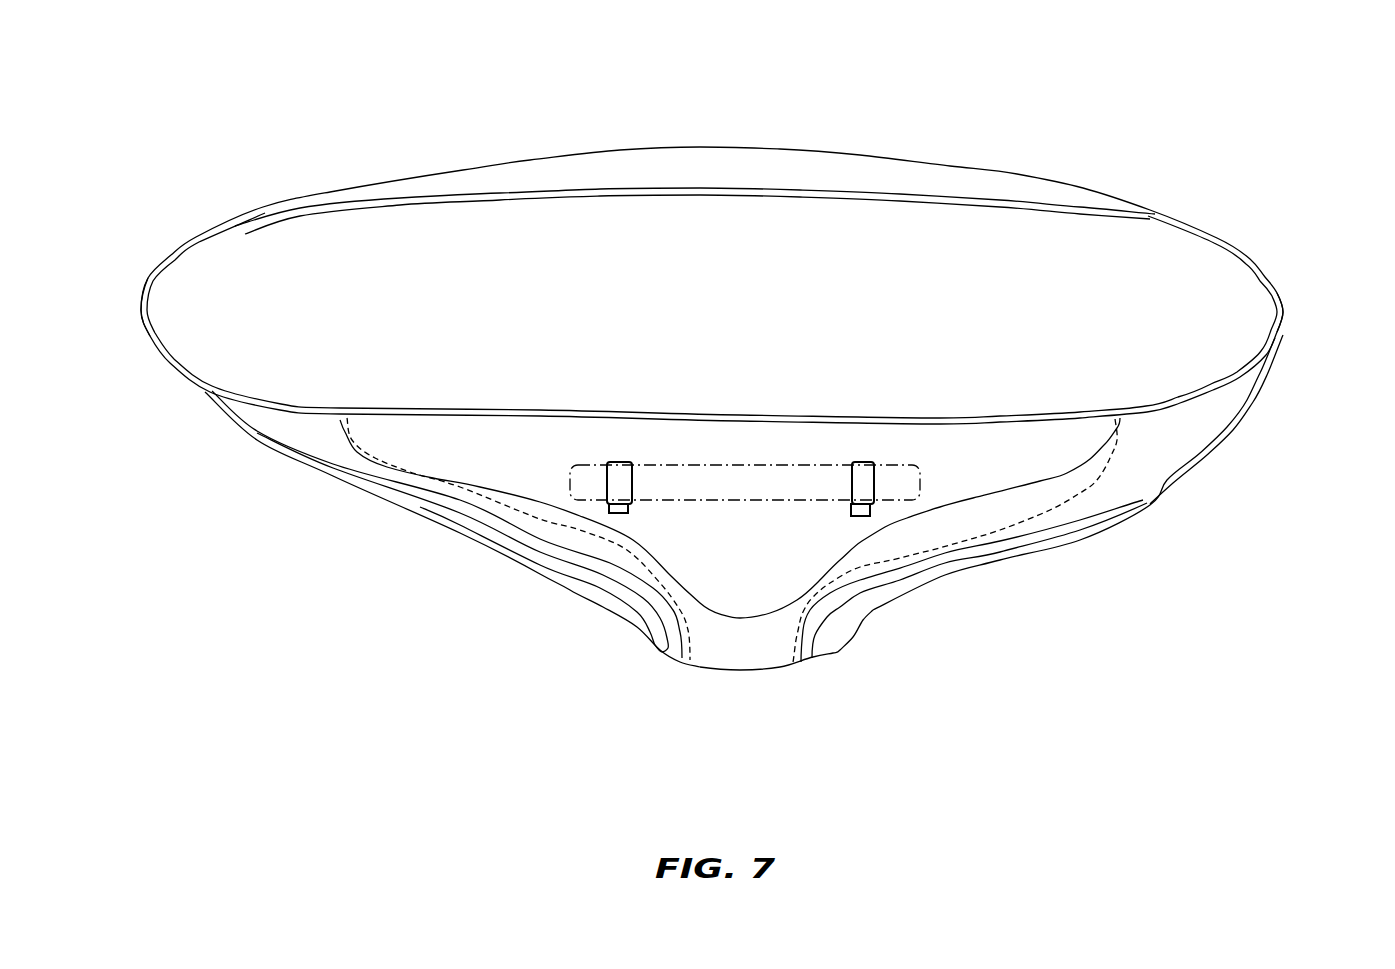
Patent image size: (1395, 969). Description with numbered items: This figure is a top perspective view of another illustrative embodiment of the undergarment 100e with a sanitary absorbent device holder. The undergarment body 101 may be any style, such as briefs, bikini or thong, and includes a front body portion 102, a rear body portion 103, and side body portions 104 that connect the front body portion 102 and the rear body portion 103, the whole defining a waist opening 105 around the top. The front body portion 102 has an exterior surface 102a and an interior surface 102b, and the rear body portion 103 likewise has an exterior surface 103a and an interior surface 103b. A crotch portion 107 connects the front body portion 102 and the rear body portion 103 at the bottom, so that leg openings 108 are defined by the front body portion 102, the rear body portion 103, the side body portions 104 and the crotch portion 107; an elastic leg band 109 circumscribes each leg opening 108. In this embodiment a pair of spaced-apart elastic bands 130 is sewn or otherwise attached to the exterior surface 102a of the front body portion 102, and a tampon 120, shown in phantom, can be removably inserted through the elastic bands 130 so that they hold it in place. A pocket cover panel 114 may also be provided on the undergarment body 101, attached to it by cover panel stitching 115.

The undergarment 100e is at (441, 98).
The undergarment body 101 is at (1275, 250).
The front body portion 102 is at (433, 420).
The exterior surface 102a is at (1190, 450).
The interior surface 102b is at (383, 416).
The rear body portion 103 is at (555, 189).
The exterior surface 103a is at (692, 165).
The interior surface 103b is at (785, 197).
The side body portions 104 is at (147, 306).
The waist opening 105 is at (202, 272).
The crotch portion 107 is at (835, 625).
The leg openings 108 is at (563, 582).
The elastic leg band 109 is at (650, 603).
The pocket cover panel 114 is at (518, 438).
The cover panel stitching 115 is at (787, 647).
The tampon 120 is at (740, 478).
The elastic bands 130 is at (855, 480).